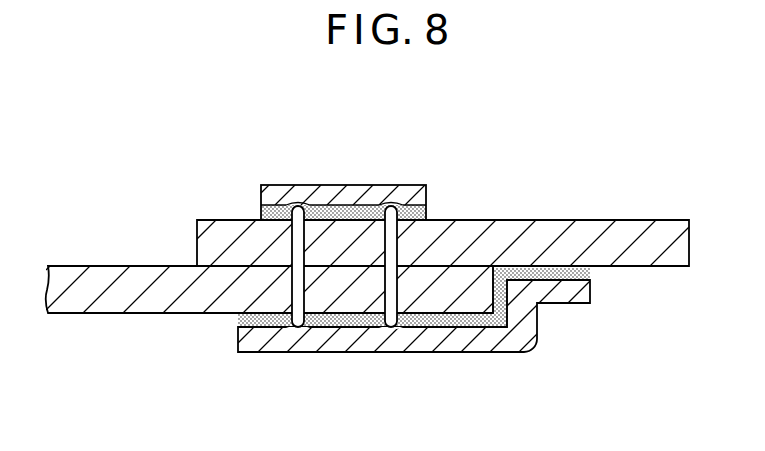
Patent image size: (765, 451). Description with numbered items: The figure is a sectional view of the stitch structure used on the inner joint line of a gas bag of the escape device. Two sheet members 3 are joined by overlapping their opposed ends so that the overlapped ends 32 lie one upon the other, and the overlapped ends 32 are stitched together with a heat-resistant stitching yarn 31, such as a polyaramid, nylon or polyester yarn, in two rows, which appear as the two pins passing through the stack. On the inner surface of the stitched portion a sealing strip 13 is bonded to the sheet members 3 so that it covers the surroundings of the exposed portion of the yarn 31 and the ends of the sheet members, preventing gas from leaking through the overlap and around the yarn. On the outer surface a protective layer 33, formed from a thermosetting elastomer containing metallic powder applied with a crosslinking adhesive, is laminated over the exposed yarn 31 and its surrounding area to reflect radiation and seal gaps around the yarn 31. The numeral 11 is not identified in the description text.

The sheet member 3 is at (85, 266).
The connection pin 11 is at (262, 208).
The sealing strip 13 is at (500, 337).
The stitching yarn 31 is at (387, 282).
The overlapped ends 32 is at (467, 290).
The protective layer 33 is at (345, 200).